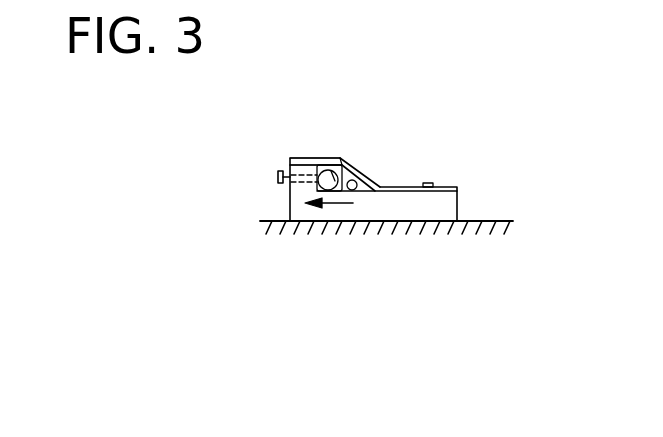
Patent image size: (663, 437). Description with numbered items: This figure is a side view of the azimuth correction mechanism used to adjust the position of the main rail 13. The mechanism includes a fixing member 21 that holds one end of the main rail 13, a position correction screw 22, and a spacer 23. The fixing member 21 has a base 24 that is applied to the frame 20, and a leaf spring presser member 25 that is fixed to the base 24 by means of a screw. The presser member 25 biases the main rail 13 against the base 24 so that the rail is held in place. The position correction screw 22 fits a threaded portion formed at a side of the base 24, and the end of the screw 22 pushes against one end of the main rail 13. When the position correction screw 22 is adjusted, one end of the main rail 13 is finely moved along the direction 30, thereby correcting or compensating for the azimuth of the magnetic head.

The main rail 13 is at (343, 164).
The frame 20 is at (487, 221).
The fixing member 21 is at (303, 237).
The position correction screw 22 is at (277, 180).
The spacer 23 is at (355, 173).
The base 24 is at (425, 208).
The leaf spring presser member 25 is at (313, 158).
The direction 30 is at (341, 206).